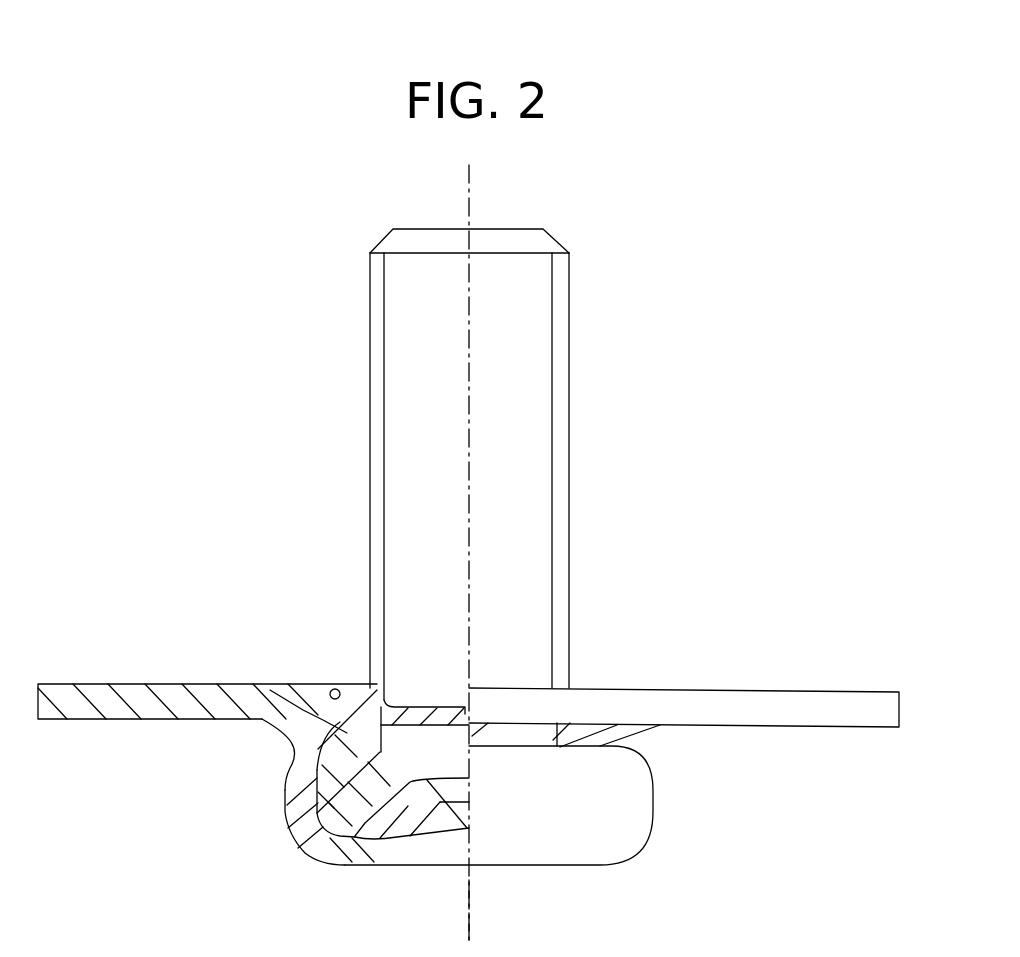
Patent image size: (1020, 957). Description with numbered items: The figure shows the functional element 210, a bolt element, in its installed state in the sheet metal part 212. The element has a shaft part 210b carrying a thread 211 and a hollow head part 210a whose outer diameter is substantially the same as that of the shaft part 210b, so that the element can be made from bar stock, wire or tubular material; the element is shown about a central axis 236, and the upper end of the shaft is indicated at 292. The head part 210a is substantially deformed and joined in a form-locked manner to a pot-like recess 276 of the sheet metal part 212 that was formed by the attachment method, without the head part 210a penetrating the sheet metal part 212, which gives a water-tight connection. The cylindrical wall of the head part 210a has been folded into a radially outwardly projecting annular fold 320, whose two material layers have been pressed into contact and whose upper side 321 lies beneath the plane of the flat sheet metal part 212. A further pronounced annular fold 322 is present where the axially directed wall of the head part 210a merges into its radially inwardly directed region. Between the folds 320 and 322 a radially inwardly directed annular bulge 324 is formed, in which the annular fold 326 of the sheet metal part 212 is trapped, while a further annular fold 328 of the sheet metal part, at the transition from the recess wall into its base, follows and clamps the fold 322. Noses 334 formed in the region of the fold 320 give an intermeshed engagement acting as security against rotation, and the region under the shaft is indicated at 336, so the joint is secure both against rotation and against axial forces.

The functional element 210 is at (600, 463).
The head part 210a is at (295, 700).
The shaft part 210b is at (410, 384).
The thread 211 is at (562, 337).
The sheet metal part 212 is at (92, 712).
The central axis 236 is at (472, 906).
The pot-like recess 276 is at (285, 818).
The head of fastener 292 is at (527, 228).
The annular fold 320 is at (318, 688).
The upper side of the annular fold 321 is at (346, 688).
The annular fold 322 is at (339, 858).
The radially inwardly directed annular bulge 324 is at (287, 790).
The annular fold of the sheet metal part 326 is at (318, 746).
The annular fold of the sheet metal part 328 is at (304, 857).
The noses 334 is at (568, 737).
The flange strip under shank 336 is at (541, 727).